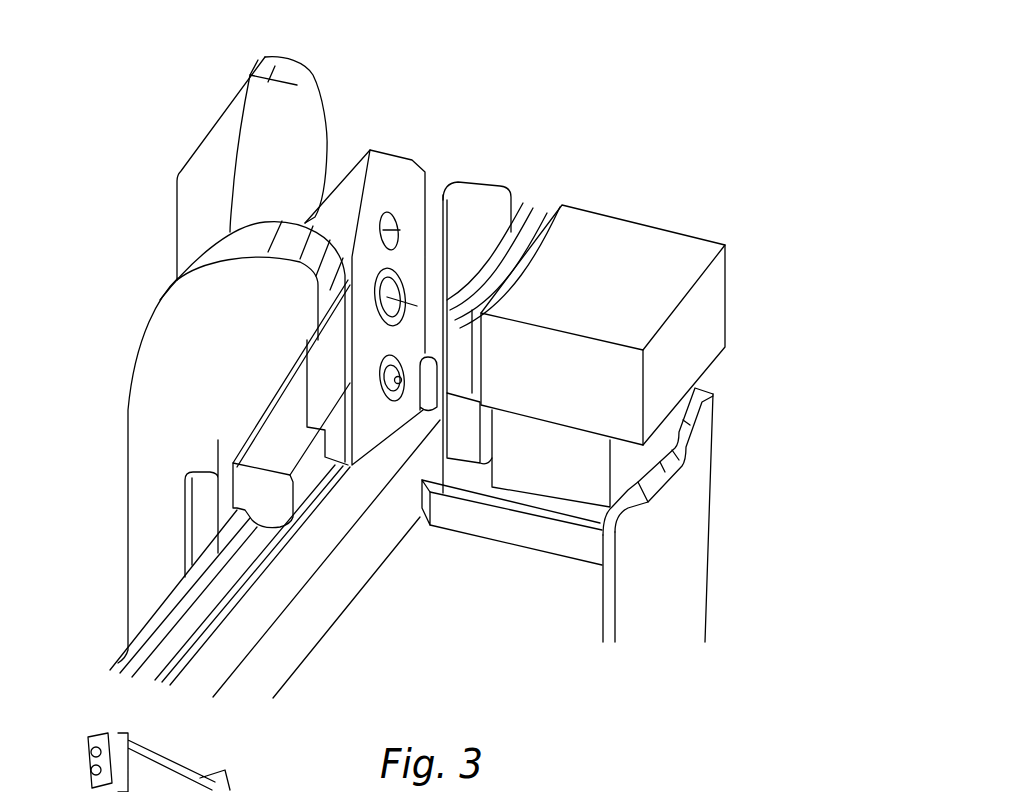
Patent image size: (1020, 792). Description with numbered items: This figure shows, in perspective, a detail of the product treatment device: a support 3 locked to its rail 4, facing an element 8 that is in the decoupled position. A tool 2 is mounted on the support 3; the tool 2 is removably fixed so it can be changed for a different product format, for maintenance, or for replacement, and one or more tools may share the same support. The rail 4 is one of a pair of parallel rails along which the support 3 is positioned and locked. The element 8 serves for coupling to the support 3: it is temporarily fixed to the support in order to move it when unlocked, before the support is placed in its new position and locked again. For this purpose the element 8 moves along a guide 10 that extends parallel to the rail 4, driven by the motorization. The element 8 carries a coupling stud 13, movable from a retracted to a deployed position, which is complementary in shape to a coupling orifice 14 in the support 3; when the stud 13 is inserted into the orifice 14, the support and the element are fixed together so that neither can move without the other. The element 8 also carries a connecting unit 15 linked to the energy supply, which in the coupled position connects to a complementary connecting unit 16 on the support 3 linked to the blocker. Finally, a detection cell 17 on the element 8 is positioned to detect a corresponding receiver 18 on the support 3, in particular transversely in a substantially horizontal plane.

The tool 2 is at (183, 207).
The support 3 is at (325, 402).
The rail 4 is at (172, 642).
The element 8 is at (743, 233).
The guide 10 is at (473, 578).
The coupling stud 13 is at (416, 307).
The coupling orifice 14 is at (417, 306).
The connecting unit 15 is at (424, 170).
The complementary connecting unit 16 is at (398, 230).
The detection cell 17 is at (387, 388).
The receiver 18 is at (425, 393).